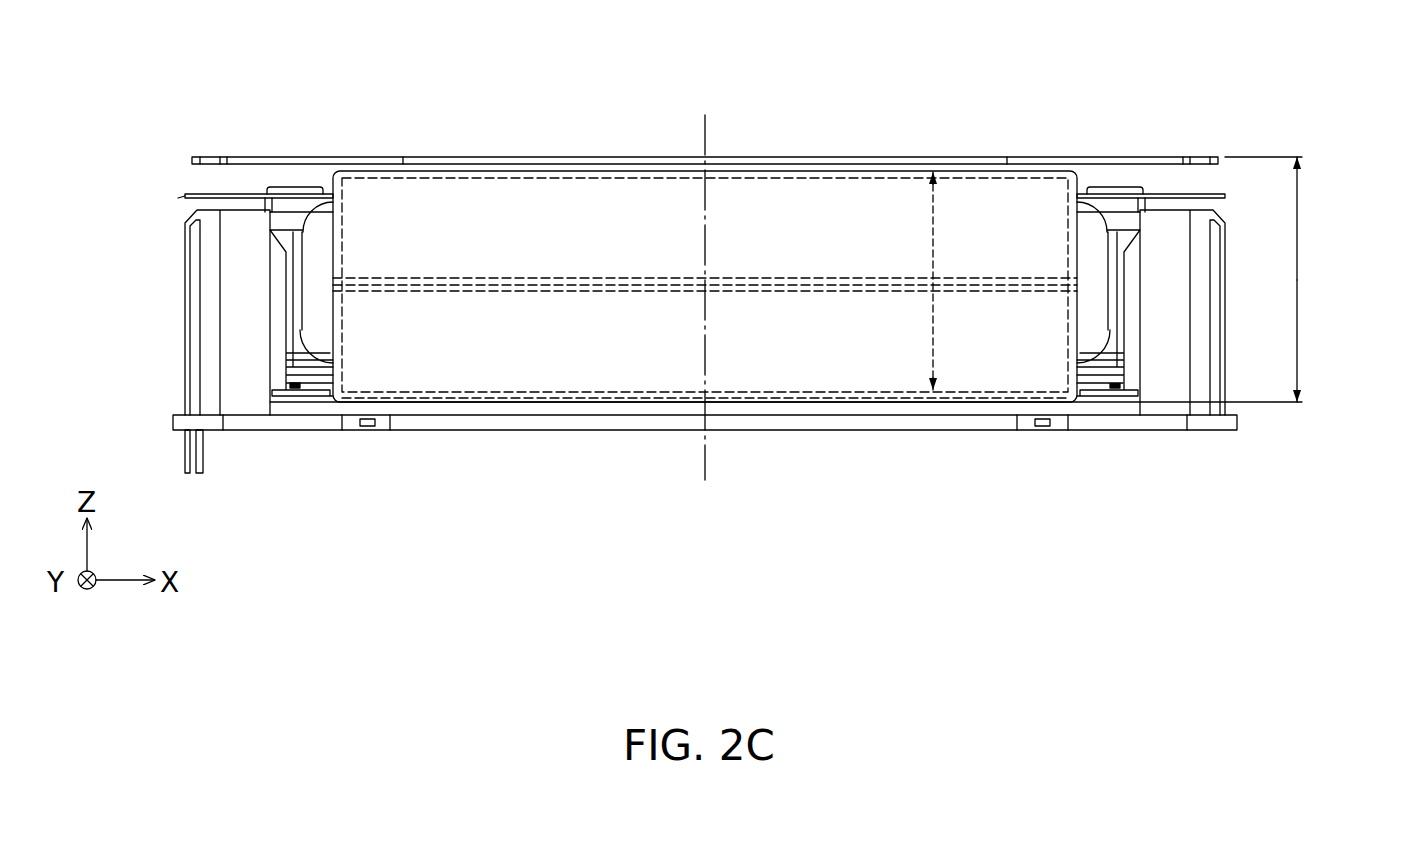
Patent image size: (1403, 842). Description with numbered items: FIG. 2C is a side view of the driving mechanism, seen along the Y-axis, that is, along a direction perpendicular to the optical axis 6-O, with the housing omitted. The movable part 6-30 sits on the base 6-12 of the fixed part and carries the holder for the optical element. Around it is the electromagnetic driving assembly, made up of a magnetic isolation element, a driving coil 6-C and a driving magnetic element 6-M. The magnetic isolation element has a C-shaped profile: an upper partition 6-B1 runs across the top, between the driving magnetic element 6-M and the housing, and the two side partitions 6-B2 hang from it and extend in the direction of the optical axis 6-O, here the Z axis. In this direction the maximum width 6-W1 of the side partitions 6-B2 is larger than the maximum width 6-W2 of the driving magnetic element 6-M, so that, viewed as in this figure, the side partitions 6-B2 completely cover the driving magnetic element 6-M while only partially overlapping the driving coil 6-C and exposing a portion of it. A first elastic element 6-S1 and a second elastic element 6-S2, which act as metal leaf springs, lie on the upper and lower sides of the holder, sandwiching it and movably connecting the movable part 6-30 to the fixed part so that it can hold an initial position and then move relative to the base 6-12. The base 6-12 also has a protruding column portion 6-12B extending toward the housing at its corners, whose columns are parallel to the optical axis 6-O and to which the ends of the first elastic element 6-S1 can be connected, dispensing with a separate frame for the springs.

The optical axis 6-O is at (703, 275).
The upper partition 6-B1 is at (1167, 157).
The first elastic element 6-S1 is at (178, 198).
The second elastic element 6-S2 is at (1115, 374).
The driving coil 6-C is at (319, 342).
The movable part 6-30 is at (1122, 218).
The side partition 6-B2 is at (570, 375).
The driving magnetic element 6-M is at (855, 393).
The base 6-12 is at (1100, 432).
The protruding column portion 6-12B is at (1228, 358).
The maximum width of the side partitions 6-W1 is at (1300, 279).
The maximum width of the driving magnetic element 6-W2 is at (890, 281).